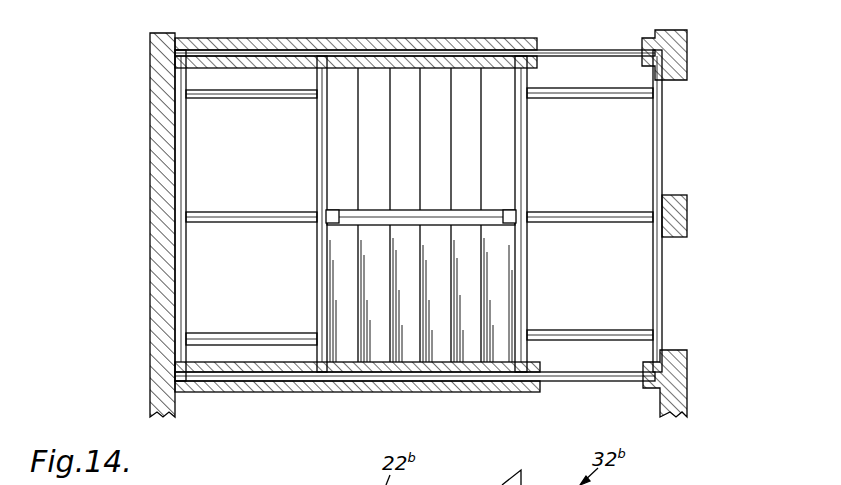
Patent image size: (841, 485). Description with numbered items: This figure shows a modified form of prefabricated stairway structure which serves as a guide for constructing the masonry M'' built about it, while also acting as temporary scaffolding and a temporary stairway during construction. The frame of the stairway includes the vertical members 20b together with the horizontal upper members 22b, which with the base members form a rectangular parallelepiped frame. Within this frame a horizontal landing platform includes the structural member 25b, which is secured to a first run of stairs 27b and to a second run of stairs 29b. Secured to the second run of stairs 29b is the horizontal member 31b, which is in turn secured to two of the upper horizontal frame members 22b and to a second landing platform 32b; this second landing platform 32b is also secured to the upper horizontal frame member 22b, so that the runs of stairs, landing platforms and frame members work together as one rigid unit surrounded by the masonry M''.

The masonry M'' is at (135, 225).
The vertical members 20b is at (176, 52).
The horizontal upper members 22b is at (409, 56).
The second run of stairs 29b is at (392, 70).
The structural member 25b is at (320, 246).
The horizontal member 31b is at (524, 173).
The first run of stairs 27b is at (406, 356).
The second landing platform 32b is at (577, 316).